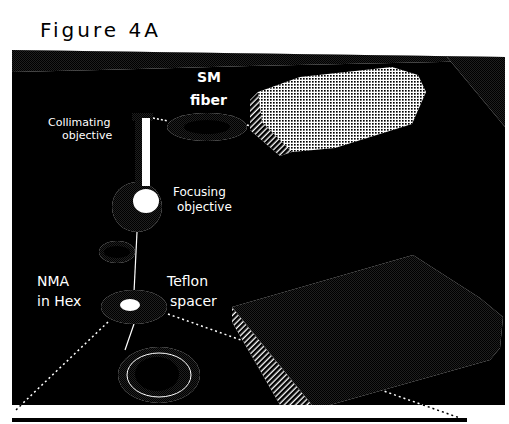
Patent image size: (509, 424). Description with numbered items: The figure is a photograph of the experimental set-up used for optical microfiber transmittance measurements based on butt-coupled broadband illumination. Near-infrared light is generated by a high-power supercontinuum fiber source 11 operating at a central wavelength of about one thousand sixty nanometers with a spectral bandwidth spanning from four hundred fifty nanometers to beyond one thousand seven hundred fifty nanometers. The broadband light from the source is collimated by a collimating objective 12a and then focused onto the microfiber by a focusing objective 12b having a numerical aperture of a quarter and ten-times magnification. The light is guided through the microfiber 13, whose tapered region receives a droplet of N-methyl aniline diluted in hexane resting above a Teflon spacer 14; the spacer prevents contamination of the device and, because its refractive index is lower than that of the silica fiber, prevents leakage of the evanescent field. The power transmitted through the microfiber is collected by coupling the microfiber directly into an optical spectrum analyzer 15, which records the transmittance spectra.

The supercontinuum fiber source 11 is at (338, 111).
The collimating objective 12a is at (115, 141).
The focusing objective 12b is at (107, 241).
The microfiber 13 is at (136, 284).
The Teflon spacer 14 is at (132, 321).
The optical spectrum analyzer 15 is at (367, 330).